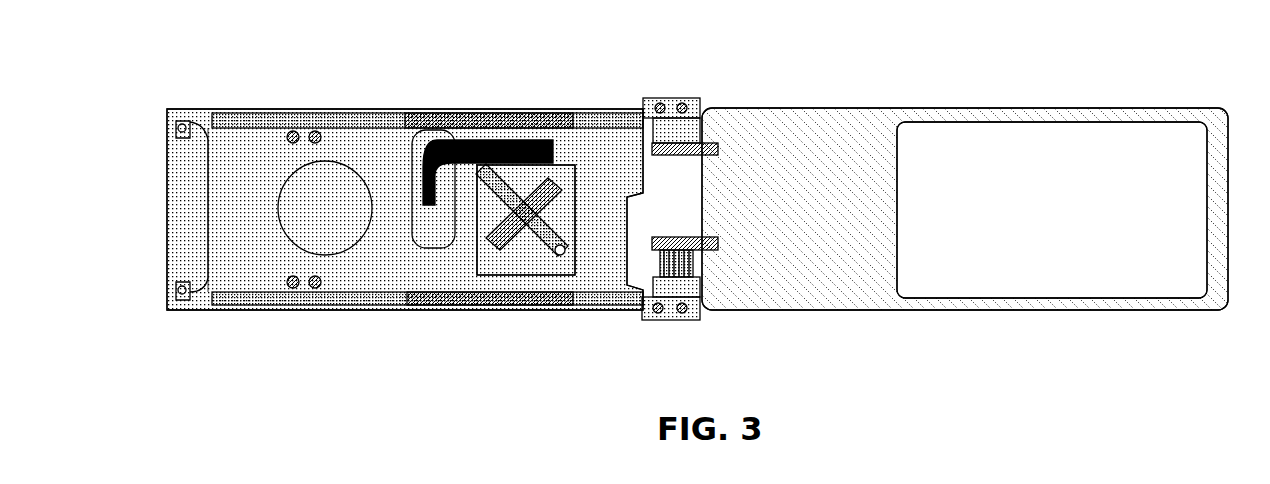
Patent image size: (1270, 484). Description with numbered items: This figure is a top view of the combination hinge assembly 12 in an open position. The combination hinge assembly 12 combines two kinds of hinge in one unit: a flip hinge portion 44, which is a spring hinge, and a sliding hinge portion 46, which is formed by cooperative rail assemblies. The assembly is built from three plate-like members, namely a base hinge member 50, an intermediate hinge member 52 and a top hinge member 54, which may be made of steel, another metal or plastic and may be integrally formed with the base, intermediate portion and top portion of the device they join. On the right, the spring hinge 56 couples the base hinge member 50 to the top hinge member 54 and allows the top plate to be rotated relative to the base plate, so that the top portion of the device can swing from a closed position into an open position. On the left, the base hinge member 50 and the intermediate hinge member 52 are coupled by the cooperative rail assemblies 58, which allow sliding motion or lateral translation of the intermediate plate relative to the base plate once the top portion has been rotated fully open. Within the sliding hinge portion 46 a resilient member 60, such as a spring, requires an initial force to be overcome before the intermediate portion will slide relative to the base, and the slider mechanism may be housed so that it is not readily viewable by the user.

The combination hinge assembly 12 is at (178, 76).
The flip hinge portion 44 is at (679, 247).
The sliding hinge portion 46 is at (490, 334).
The base hinge member 50 is at (167, 178).
The intermediate hinge member 52 is at (235, 272).
The top hinge member 54 is at (882, 308).
The spring hinge 56 is at (693, 268).
The cooperative rail assemblies 58 is at (505, 113).
The resilient member 60 is at (538, 236).